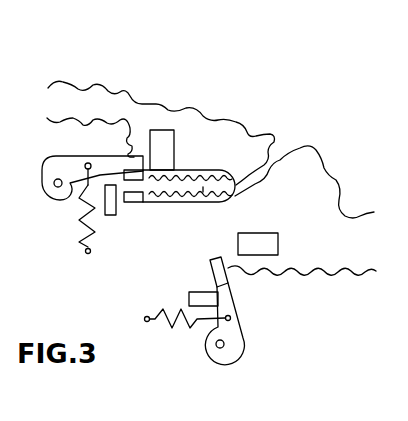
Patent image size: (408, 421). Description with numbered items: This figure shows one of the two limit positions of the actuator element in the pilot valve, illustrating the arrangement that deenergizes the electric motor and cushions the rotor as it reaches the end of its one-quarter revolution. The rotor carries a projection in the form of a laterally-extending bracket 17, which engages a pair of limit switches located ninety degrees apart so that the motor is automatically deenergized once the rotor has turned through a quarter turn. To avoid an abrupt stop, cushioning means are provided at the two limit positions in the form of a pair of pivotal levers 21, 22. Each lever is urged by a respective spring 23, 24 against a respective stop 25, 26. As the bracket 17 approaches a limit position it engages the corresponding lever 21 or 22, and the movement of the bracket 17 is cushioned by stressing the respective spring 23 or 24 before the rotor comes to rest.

The projection 17 is at (203, 178).
The pivotal lever 21 is at (82, 156).
The pivotal lever 22 is at (240, 346).
The spring 23 is at (76, 237).
The spring 24 is at (198, 325).
The stop 25 is at (116, 210).
The stop 26 is at (195, 292).